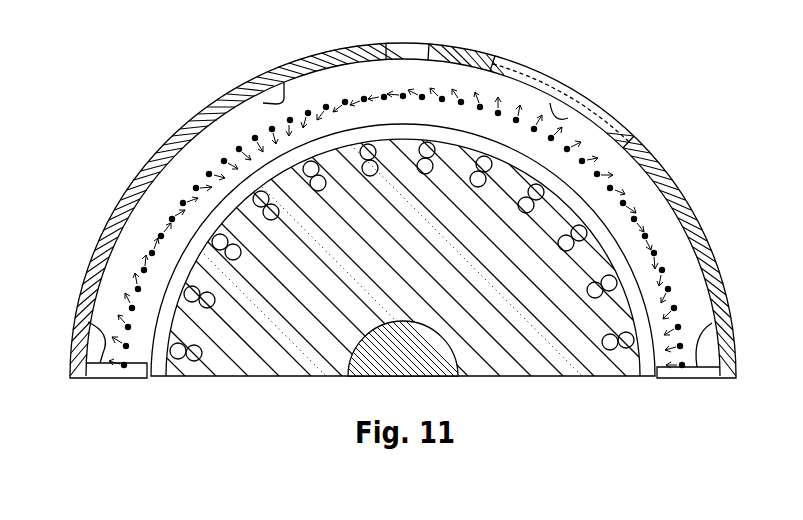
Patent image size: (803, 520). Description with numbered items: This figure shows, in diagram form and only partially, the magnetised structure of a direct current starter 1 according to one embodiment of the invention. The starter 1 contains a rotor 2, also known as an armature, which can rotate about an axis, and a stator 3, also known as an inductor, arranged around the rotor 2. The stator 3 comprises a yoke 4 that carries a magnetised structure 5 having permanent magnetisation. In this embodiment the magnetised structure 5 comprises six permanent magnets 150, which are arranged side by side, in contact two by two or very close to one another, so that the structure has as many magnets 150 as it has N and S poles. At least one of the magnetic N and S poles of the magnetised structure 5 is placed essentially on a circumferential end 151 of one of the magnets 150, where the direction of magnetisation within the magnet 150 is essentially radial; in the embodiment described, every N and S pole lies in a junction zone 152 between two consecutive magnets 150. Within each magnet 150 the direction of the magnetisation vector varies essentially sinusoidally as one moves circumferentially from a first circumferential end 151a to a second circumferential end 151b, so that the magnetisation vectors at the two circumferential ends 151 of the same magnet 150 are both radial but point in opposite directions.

The direct current starter 1 is at (676, 116).
The rotor 2 is at (566, 405).
The stator 3 is at (131, 392).
The yoke 4 is at (618, 136).
The magnetised structure 5 is at (690, 396).
The permanent magnet 150 is at (491, 62).
The circumferential end 151 is at (78, 310).
The first circumferential end 151a is at (282, 150).
The second circumferential end 151b is at (540, 135).
The junction zone 152 is at (700, 338).